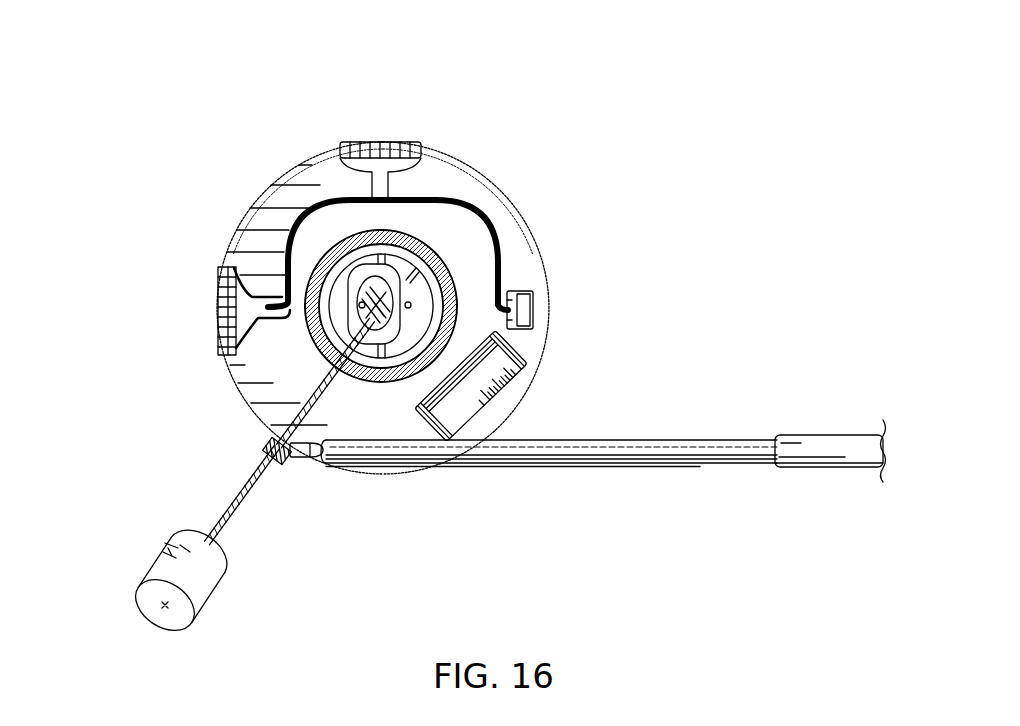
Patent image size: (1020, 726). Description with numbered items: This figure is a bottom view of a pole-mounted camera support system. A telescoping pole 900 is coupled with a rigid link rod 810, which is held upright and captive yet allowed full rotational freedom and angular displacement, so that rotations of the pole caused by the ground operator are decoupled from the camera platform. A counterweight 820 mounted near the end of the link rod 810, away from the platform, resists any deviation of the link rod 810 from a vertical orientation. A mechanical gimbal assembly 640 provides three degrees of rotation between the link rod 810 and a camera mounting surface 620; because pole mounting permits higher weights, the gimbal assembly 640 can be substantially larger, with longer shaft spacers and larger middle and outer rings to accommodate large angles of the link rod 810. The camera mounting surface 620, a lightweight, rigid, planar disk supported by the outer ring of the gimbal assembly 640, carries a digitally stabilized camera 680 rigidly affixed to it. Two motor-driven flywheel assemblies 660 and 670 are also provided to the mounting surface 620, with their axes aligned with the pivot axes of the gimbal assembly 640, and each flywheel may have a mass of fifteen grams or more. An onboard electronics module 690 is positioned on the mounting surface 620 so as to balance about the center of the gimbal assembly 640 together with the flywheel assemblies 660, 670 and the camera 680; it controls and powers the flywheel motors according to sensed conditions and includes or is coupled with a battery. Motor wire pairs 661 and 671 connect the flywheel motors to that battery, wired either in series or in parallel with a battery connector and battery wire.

The camera mounting surface 620 is at (240, 220).
The gimbal assembly 640 is at (296, 349).
The flywheel assembly 660 is at (351, 116).
The motor wire pair 661 is at (493, 237).
The flywheel assembly 670 is at (194, 302).
The motor wire pair 671 is at (313, 213).
The digitally stabilized camera 680 is at (500, 402).
The onboard electronics module 690 is at (591, 303).
The link rod 810 is at (197, 491).
The counterweight 820 is at (213, 597).
The telescoping pole 900 is at (752, 523).